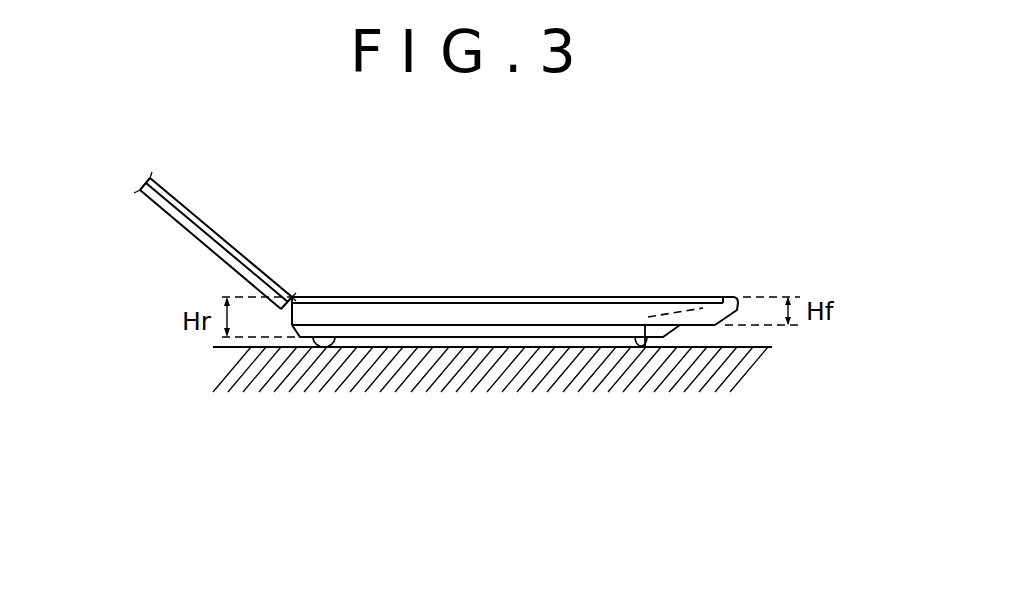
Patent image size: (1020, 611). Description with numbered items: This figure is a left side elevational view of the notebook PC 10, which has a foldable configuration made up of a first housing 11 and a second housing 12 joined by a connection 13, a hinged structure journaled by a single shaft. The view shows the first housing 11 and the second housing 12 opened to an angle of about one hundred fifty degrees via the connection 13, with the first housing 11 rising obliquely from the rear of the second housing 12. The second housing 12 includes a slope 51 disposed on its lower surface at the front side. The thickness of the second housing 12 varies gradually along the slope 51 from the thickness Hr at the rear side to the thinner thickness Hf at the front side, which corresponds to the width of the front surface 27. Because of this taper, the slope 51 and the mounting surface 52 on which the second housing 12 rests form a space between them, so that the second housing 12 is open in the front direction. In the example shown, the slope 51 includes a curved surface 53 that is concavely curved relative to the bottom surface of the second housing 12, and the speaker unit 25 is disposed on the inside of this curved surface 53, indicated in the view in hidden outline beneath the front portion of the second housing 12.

The notebook PC 10 is at (505, 467).
The first housing 11 is at (197, 244).
The second housing 12 is at (395, 338).
The connection 13 is at (293, 296).
The speaker unit 25 is at (669, 316).
The front surface 27 is at (735, 308).
The slope 51 is at (670, 336).
The mounting surface 52 is at (762, 347).
The curved surface 53 is at (705, 312).